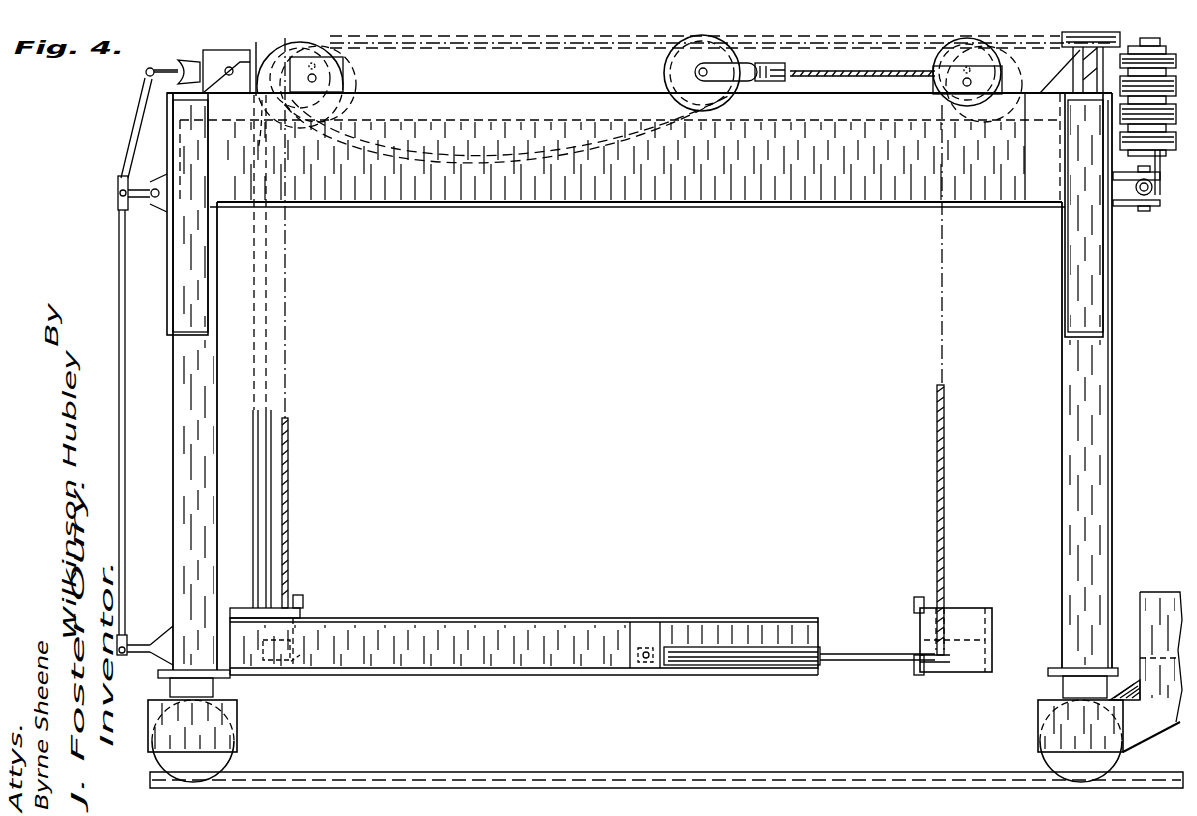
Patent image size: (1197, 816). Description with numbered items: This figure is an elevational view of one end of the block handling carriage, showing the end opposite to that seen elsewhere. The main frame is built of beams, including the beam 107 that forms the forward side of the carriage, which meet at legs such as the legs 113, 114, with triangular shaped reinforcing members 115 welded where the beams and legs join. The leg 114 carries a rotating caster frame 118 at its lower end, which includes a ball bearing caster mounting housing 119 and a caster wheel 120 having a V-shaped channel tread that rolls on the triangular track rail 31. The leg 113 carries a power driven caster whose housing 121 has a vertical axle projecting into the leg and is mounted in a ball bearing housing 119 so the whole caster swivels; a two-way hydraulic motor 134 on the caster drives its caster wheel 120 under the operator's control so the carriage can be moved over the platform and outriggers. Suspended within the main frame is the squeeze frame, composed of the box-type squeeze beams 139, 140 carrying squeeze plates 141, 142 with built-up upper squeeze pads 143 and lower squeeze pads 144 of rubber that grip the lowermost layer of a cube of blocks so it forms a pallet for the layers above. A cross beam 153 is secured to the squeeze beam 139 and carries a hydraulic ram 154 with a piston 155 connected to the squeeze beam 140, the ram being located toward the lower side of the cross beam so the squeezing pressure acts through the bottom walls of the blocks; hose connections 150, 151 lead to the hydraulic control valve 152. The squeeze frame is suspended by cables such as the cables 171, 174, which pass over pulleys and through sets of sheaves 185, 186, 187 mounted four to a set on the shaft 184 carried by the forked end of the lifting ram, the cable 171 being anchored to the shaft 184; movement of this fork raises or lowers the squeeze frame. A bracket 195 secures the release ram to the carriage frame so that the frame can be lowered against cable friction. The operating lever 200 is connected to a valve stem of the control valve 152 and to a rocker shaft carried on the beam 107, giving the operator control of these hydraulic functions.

The track rail 31 is at (560, 770).
The beam 107 is at (746, 196).
The leg 113 is at (1076, 433).
The leg 114 is at (174, 476).
The triangular shaped reinforcing member 115 is at (183, 226).
The rotating caster frame 118 is at (232, 714).
The ball bearing caster mounting housing 119 is at (215, 687).
The caster wheel 120 is at (234, 756).
The housing 121 is at (1140, 706).
The two-way hydraulic motor 134 is at (1158, 592).
The squeeze beam 139 is at (242, 606).
The squeeze beam 140 is at (970, 612).
The squeeze plate 141 is at (920, 622).
The squeeze plate 142 is at (310, 634).
The upper squeeze pad 143 is at (305, 602).
The lower squeeze pad 144 is at (308, 660).
The hose connection 150 is at (254, 460).
The hose connection 151 is at (268, 486).
The hydraulic control valve 152 is at (214, 48).
The cross beam 153 is at (700, 616).
The hydraulic ram 154 is at (748, 666).
The piston 155 is at (846, 654).
The cable 171 is at (290, 488).
The cable 174 is at (935, 474).
The shaft 184 is at (1150, 38).
The set of sheaves 185 is at (1126, 74).
The set of sheaves 186 is at (1128, 98).
The set of sheaves 187 is at (1130, 134).
The bracket 195 is at (1118, 206).
The operating lever 200 is at (136, 130).